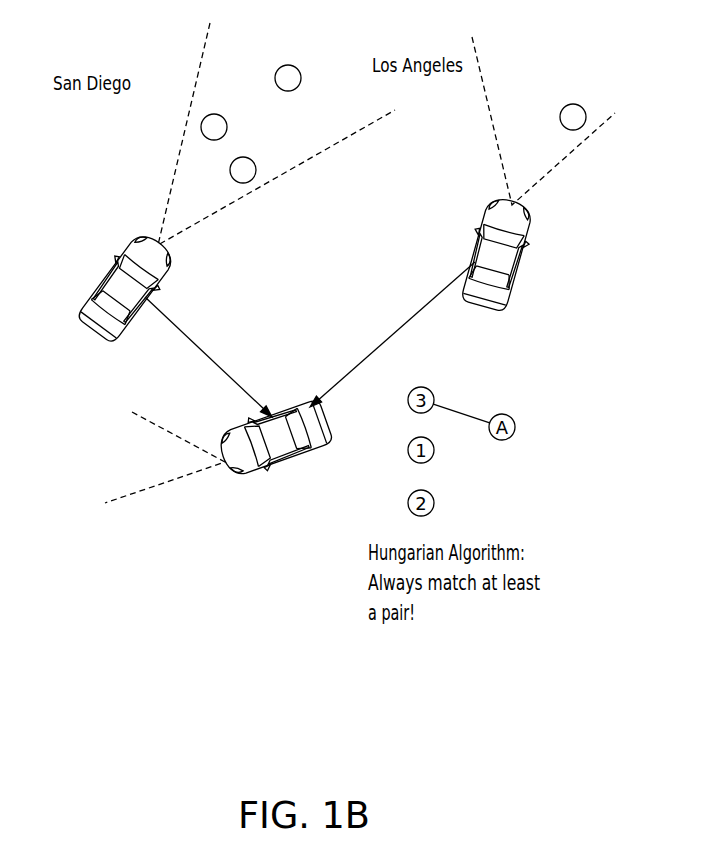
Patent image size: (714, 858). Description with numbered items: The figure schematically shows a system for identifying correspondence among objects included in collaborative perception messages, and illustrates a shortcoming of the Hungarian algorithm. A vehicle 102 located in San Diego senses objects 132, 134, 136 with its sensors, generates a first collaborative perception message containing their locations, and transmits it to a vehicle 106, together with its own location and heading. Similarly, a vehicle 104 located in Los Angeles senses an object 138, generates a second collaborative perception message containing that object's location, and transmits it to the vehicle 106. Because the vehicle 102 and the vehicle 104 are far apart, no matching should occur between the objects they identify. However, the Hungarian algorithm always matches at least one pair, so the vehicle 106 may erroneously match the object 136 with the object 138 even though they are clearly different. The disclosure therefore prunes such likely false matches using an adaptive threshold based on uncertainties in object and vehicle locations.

The vehicle 102 is at (143, 254).
The vehicle 104 is at (527, 230).
The vehicle 106 is at (304, 455).
The object 132 is at (214, 114).
The object 134 is at (243, 157).
The object 136 is at (288, 65).
The object 138 is at (573, 104).